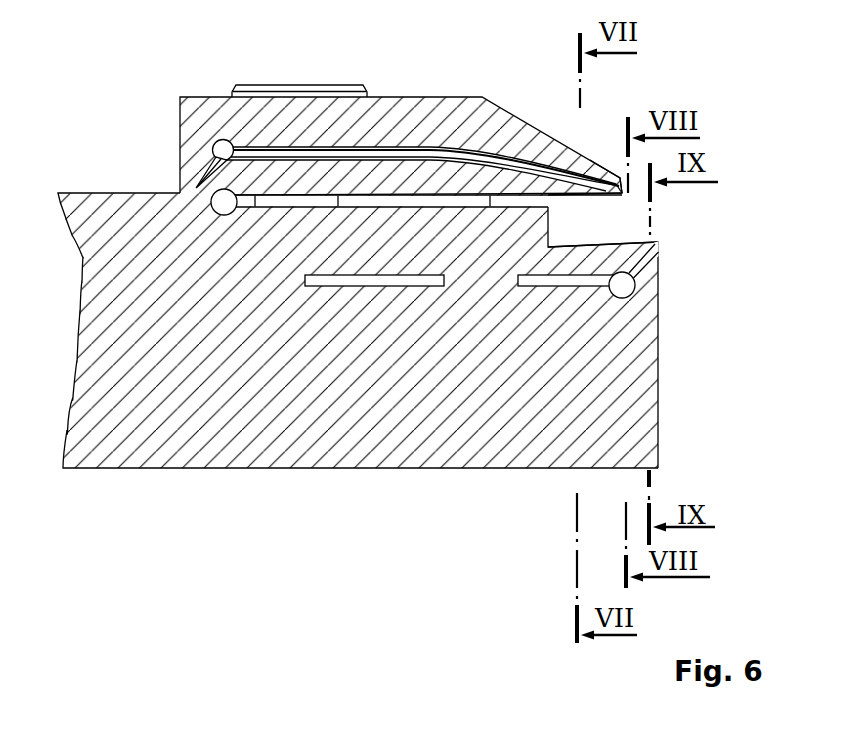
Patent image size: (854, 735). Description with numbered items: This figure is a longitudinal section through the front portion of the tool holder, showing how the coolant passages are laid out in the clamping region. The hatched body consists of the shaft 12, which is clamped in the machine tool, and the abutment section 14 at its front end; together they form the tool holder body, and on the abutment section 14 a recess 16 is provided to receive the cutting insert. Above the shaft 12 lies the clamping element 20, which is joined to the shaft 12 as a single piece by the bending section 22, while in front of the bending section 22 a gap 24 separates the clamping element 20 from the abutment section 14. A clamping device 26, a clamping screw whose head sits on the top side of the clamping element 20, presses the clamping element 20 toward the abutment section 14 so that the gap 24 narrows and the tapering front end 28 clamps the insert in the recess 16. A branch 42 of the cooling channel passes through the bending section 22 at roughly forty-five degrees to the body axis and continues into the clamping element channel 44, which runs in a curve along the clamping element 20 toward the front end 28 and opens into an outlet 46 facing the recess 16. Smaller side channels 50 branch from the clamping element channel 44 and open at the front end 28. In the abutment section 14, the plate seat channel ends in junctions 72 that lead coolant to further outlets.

The shaft 12 is at (80, 202).
The abutment section 14 is at (638, 383).
The recess 16 is at (633, 242).
The clamping element 20 is at (197, 103).
The bending section 22 is at (181, 197).
The gap 24 is at (487, 200).
The clamping device 26 is at (332, 83).
The front end 28 is at (572, 182).
The branch 42 is at (183, 186).
The clamping element channel 44 is at (440, 150).
The outlet 46 is at (575, 196).
The side channels 50 is at (597, 180).
The junctions 72 is at (652, 262).